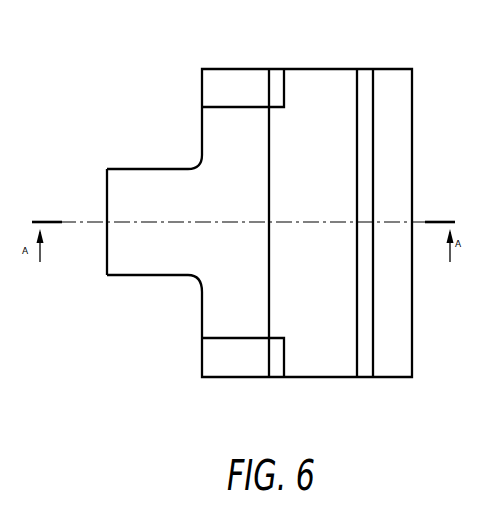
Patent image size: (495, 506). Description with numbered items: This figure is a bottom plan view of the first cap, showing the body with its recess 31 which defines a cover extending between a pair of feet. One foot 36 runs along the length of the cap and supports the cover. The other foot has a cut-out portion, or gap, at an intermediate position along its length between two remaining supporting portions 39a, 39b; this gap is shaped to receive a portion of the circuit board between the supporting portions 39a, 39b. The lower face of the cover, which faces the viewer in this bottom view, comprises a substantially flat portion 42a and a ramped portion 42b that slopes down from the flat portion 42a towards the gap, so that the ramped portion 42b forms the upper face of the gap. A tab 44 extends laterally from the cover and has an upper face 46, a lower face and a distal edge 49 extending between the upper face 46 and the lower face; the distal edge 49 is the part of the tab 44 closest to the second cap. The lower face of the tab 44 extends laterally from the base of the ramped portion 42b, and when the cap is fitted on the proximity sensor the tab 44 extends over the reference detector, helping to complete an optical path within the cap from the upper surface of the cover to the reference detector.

The recess 31 is at (312, 341).
The foot 36 is at (404, 191).
The supporting portion 39a is at (228, 80).
The supporting portion 39b is at (247, 360).
The flat portion 42a is at (315, 103).
The ramped portion 42b is at (228, 158).
The tab 44 is at (162, 263).
The upper face 46 is at (154, 183).
The distal edge 49 is at (106, 202).